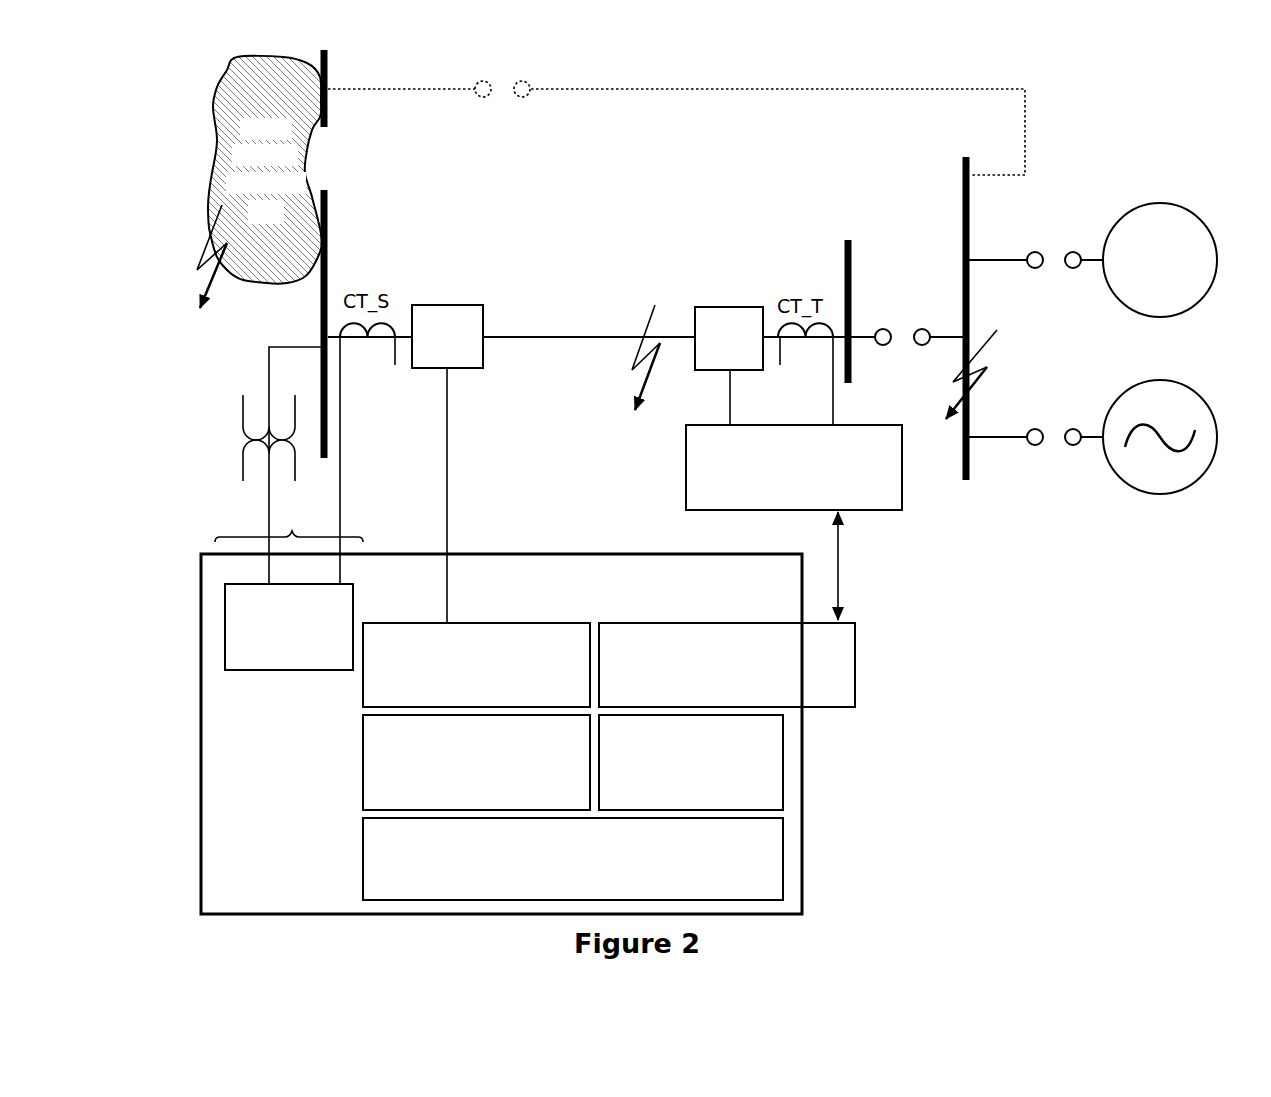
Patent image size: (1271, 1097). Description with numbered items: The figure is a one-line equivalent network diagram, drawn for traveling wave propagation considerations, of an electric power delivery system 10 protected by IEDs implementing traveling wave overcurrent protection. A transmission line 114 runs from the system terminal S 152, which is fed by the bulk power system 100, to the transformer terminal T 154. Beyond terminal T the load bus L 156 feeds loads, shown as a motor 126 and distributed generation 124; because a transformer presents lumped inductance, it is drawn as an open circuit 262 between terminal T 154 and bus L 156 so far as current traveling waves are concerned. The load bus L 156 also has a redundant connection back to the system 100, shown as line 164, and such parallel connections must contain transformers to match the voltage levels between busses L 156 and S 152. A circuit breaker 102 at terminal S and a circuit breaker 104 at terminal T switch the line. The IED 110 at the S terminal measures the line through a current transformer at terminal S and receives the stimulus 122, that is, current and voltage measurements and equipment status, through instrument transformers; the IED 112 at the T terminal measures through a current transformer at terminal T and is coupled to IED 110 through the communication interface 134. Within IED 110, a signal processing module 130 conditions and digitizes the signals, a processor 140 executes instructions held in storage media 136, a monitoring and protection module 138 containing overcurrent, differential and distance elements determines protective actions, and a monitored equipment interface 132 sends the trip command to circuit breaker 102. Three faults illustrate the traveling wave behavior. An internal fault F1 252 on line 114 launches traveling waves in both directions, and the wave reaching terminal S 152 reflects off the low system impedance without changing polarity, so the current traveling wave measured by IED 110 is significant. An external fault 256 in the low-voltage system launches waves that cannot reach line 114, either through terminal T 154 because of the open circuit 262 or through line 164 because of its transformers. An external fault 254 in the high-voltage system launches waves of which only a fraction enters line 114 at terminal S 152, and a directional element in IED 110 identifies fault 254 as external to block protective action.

The electric power delivery system 10 is at (1100, 70).
The power system 100 is at (247, 222).
The circuit breaker 102 is at (428, 349).
The circuit breaker 104 is at (710, 349).
The IED 110 is at (533, 613).
The IED 112 is at (774, 491).
The transmission line 114 is at (562, 334).
The stimulus 122 is at (292, 530).
The distributed generation 124 is at (1195, 388).
The motors 126 is at (1195, 211).
The signal processing module 130 is at (270, 664).
The monitored equipment interface 132 is at (457, 701).
The communication interface 134 is at (708, 701).
The storage media 136 is at (458, 786).
The monitoring and protection module 138 is at (671, 800).
The processor 140 is at (554, 883).
The system terminal S 152 is at (330, 210).
The transformer terminal T 154 is at (842, 262).
The load bus 156 is at (962, 193).
The line 164 is at (673, 90).
The internal fault F1 252 is at (648, 320).
The external fault 254 is at (197, 268).
The external fault 256 is at (1000, 340).
The open circuit 262 is at (906, 330).